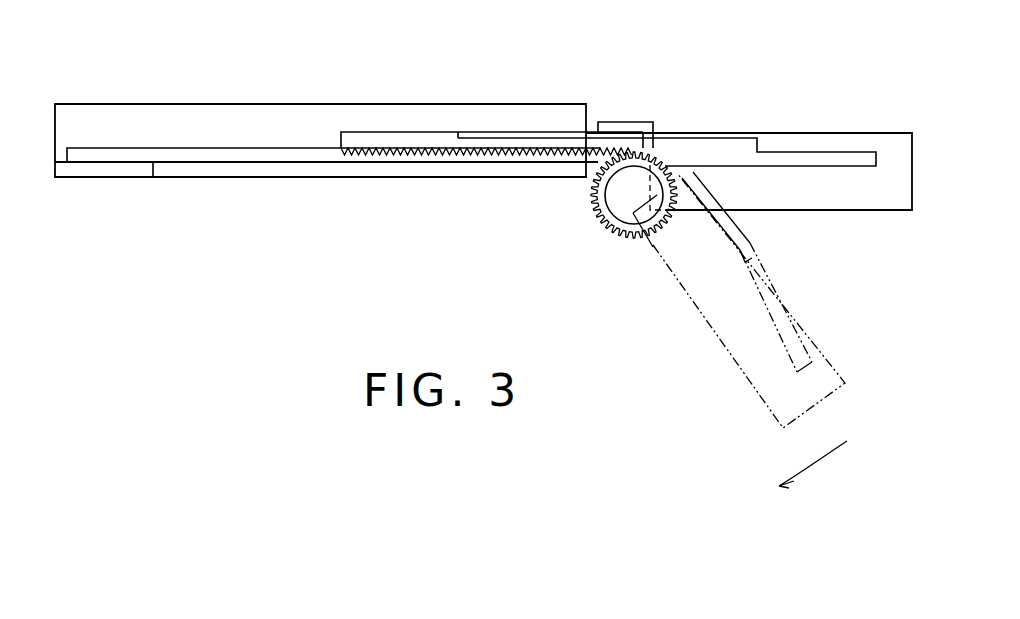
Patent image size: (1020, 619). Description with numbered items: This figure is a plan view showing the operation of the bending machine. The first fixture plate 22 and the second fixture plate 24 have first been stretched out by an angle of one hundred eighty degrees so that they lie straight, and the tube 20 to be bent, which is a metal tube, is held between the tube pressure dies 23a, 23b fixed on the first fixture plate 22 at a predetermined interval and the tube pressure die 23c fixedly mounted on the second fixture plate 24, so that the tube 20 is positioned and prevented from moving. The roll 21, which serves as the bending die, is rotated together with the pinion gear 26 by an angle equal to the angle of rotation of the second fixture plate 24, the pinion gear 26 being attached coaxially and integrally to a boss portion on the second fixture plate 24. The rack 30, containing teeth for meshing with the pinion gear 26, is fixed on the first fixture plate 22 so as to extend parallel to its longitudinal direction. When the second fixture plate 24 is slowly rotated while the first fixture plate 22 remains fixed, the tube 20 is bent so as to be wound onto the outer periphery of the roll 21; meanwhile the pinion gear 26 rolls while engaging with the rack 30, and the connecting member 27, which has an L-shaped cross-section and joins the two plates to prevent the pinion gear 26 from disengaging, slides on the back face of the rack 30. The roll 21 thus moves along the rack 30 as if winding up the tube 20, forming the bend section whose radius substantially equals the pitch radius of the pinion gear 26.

The tube 20 is at (308, 158).
The roll 21 is at (625, 205).
The first fixture plate 22 is at (293, 108).
The tube pressure die 23a is at (102, 170).
The tube pressure die 23b is at (500, 143).
The tube pressure die 23c is at (720, 146).
The second fixture plate 24 is at (845, 134).
The pinion gear 26 is at (596, 197).
The connecting member 27 is at (641, 140).
The rack 30 is at (603, 138).